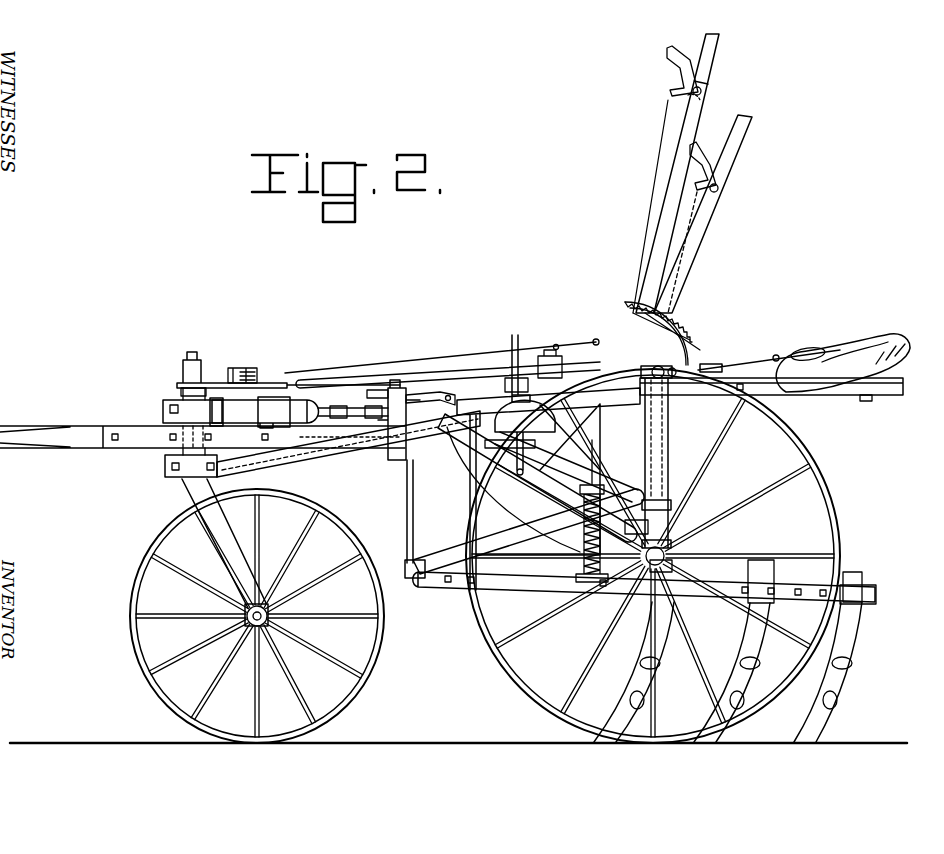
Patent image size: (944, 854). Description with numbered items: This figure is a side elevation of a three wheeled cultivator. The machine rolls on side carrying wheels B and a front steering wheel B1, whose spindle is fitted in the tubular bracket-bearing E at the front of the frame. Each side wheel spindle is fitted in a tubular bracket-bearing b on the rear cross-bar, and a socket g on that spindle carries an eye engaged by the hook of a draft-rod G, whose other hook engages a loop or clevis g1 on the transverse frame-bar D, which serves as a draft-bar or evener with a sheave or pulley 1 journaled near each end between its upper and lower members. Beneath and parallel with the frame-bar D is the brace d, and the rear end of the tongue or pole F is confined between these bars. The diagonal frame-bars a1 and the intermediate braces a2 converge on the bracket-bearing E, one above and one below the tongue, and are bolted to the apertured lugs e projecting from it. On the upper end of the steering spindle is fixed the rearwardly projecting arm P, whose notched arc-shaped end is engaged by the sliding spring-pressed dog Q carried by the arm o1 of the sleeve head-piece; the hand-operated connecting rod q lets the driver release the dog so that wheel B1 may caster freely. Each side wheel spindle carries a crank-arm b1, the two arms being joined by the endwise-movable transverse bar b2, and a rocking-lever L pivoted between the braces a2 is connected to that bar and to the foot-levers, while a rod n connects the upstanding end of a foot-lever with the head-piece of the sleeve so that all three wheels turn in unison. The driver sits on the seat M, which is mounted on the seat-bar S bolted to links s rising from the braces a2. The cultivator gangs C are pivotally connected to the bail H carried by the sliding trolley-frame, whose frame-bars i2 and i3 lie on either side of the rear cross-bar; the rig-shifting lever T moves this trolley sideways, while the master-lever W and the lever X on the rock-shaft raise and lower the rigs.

The front steering wheel B1 is at (157, 551).
The carrying wheel B is at (832, 503).
The tongue or pole F is at (21, 431).
The apertured lug or ear e is at (163, 409).
The bracket-bearing E is at (181, 394).
The rearwardly projecting arm P is at (218, 380).
The sliding spring-pressed dog Q is at (258, 371).
The rearwardly extending arm o1 is at (263, 400).
The diagonal frame-bar a1 is at (297, 405).
The intermediate brace a2 is at (302, 452).
The hand-operated connecting rod q is at (346, 370).
The rod n is at (352, 380).
The frame-bar D is at (405, 388).
The sheave or pulley 1 is at (376, 391).
The brace d is at (393, 458).
The loop or clevis g1 is at (409, 394).
The crank-arm b1 is at (584, 367).
The transverse rod or bar b2 is at (548, 356).
The rocking-lever L is at (514, 372).
The link s is at (510, 378).
The draft-rod G is at (492, 448).
The trolley frame-bar i2 is at (514, 456).
The trolley frame-bar i3 is at (490, 475).
The bail H is at (496, 513).
The tubular bracket-bearing b is at (660, 436).
The socket g is at (650, 527).
The gang of plows or cultivators C is at (722, 590).
The seat-bar S is at (870, 387).
The seat M is at (870, 350).
The rig-shifting lever T is at (718, 368).
The master-lever W is at (666, 213).
The lever X is at (697, 240).